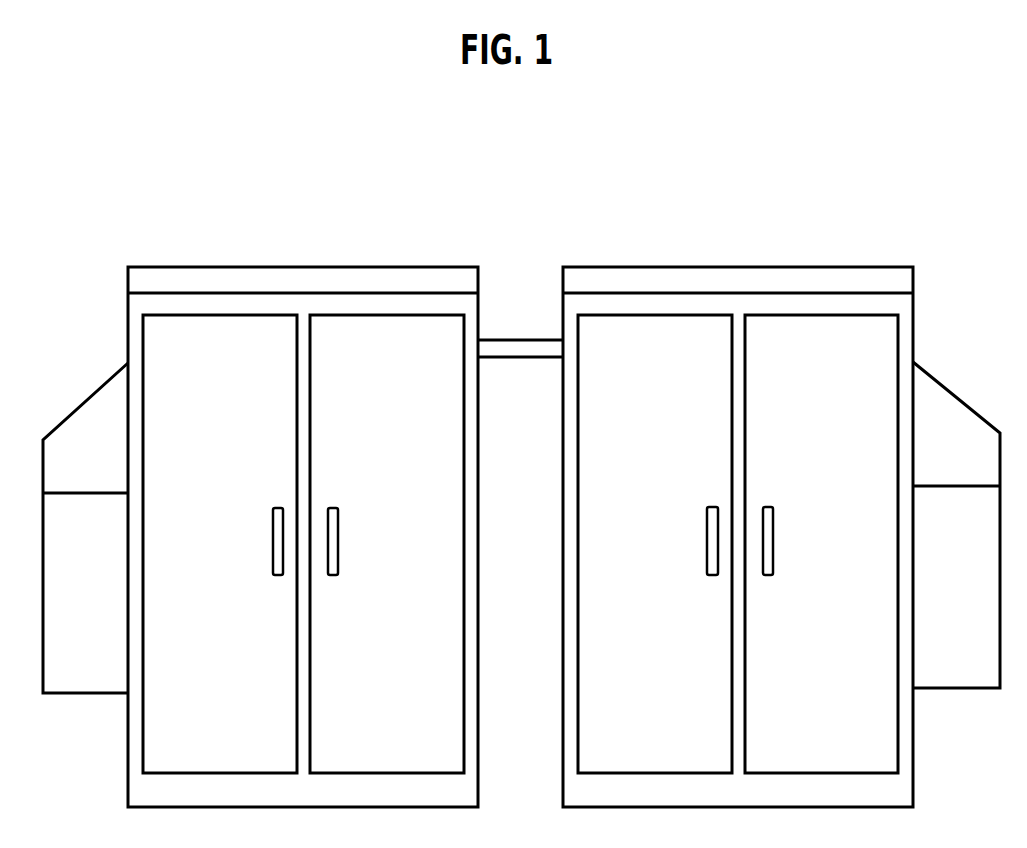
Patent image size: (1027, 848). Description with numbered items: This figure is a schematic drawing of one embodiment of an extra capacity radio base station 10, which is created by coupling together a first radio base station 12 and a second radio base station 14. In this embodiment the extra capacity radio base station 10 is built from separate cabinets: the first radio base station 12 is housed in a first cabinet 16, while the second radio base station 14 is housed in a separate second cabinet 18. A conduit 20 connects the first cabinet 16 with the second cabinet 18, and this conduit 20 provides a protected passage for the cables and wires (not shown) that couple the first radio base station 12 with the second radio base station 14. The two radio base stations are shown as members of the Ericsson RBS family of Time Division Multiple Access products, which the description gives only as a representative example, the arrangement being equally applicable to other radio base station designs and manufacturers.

The extra capacity radio base station 10 is at (351, 153).
The first radio base station 12 is at (135, 265).
The second radio base station 14 is at (900, 265).
The first cabinet 16 is at (412, 266).
The second cabinet 18 is at (737, 265).
The conduit 20 is at (527, 359).